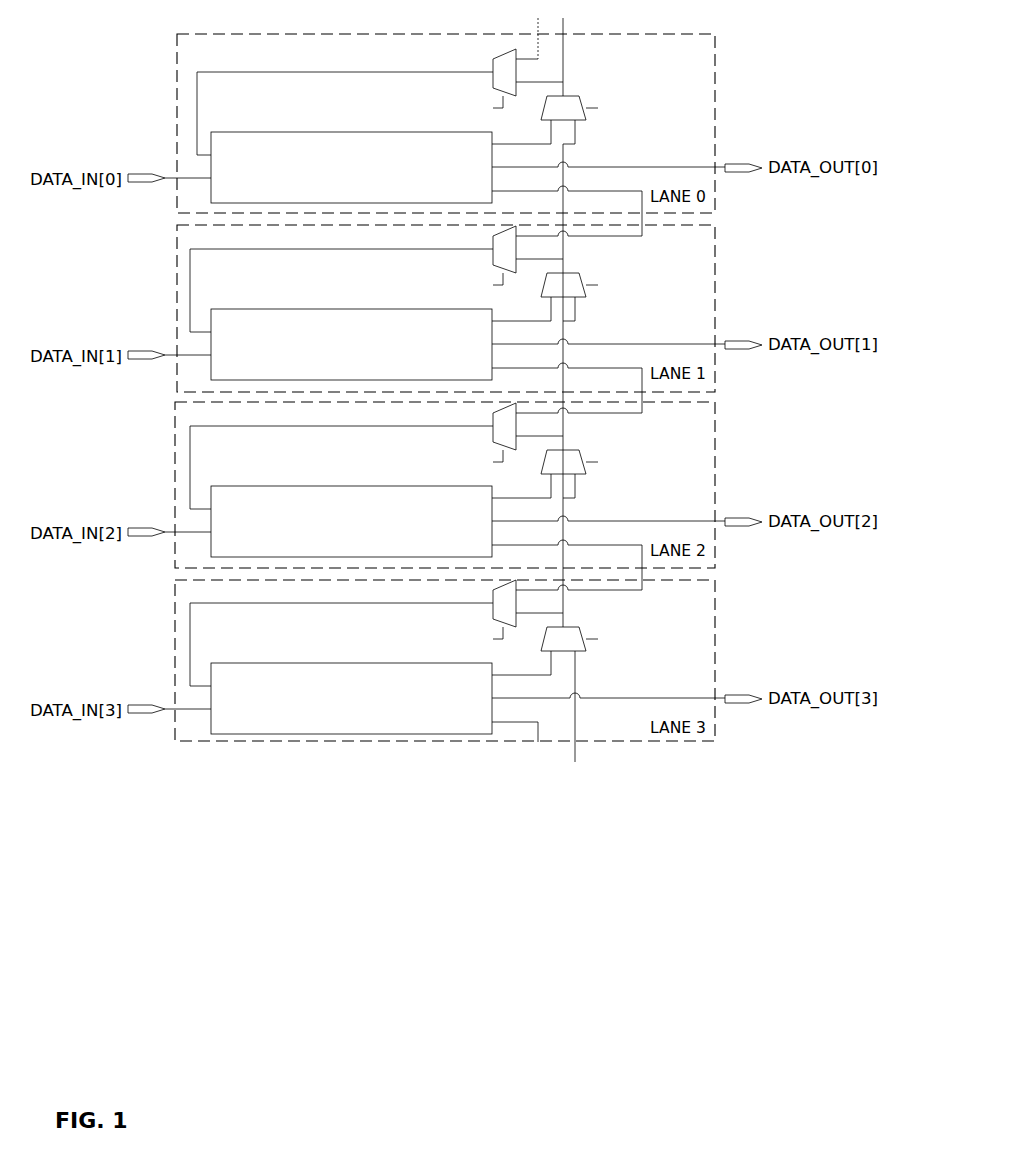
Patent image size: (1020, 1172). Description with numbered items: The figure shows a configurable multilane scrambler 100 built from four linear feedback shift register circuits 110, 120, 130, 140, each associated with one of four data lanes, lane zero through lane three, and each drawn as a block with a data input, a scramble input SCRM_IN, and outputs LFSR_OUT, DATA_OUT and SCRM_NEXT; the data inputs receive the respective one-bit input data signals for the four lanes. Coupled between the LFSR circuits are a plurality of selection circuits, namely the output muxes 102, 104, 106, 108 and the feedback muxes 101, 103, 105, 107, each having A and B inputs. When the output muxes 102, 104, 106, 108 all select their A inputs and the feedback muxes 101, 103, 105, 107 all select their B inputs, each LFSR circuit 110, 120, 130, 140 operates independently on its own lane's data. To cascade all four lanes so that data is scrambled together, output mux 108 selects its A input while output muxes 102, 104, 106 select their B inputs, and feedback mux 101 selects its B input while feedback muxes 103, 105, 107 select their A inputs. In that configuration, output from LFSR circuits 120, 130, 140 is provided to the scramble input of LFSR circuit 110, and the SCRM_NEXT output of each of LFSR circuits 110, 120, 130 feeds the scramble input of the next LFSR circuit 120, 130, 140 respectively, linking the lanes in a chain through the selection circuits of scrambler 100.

The configurable multilane scrambler 100 is at (473, 1036).
The feedback mux 101 is at (493, 58).
The output mux 102 is at (586, 121).
The feedback mux 103 is at (493, 264).
The output mux 104 is at (586, 298).
The feedback mux 105 is at (493, 435).
The output mux 106 is at (586, 475).
The feedback mux 107 is at (493, 591).
The output mux 108 is at (586, 652).
The linear feedback shift register circuit 110 is at (365, 175).
The linear feedback shift register circuit 120 is at (365, 352).
The linear feedback shift register circuit 130 is at (365, 529).
The linear feedback shift register circuit 140 is at (365, 706).